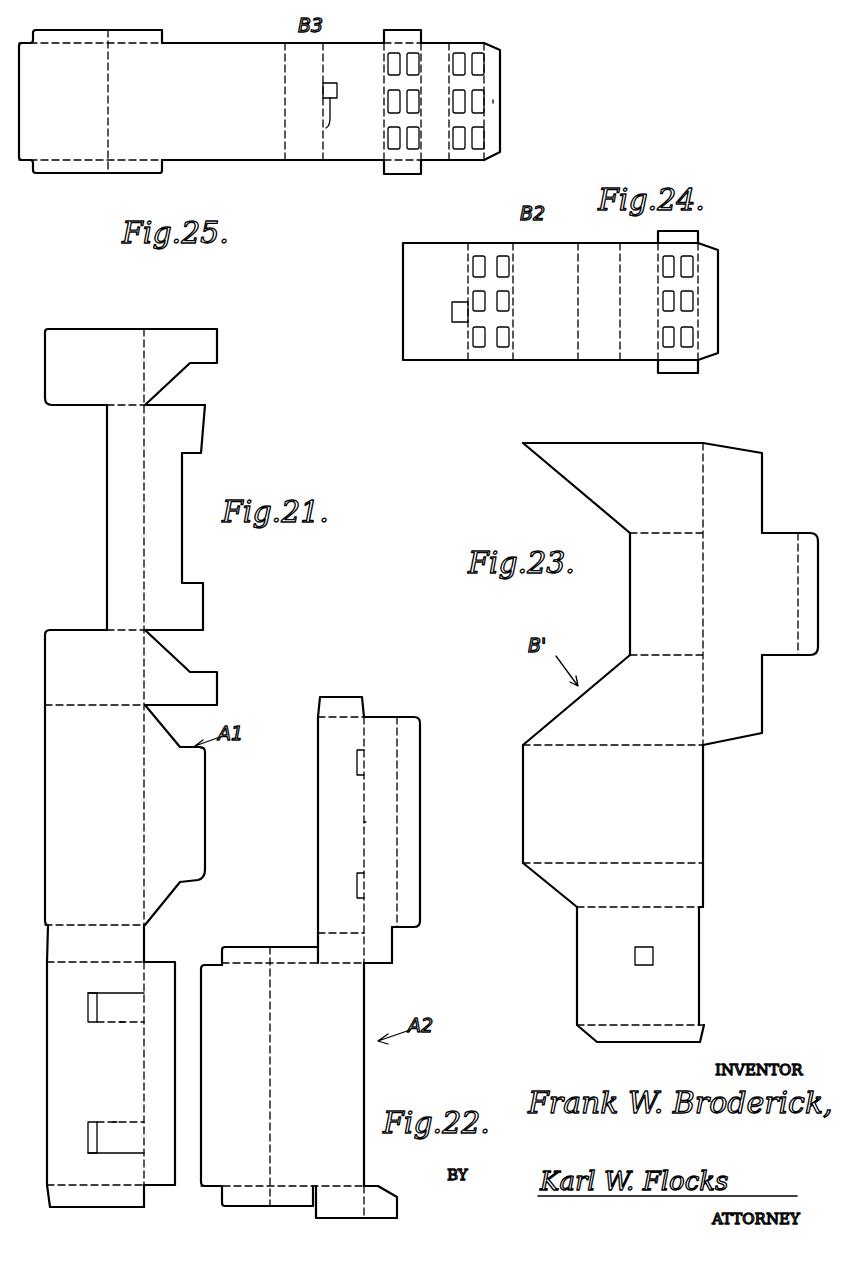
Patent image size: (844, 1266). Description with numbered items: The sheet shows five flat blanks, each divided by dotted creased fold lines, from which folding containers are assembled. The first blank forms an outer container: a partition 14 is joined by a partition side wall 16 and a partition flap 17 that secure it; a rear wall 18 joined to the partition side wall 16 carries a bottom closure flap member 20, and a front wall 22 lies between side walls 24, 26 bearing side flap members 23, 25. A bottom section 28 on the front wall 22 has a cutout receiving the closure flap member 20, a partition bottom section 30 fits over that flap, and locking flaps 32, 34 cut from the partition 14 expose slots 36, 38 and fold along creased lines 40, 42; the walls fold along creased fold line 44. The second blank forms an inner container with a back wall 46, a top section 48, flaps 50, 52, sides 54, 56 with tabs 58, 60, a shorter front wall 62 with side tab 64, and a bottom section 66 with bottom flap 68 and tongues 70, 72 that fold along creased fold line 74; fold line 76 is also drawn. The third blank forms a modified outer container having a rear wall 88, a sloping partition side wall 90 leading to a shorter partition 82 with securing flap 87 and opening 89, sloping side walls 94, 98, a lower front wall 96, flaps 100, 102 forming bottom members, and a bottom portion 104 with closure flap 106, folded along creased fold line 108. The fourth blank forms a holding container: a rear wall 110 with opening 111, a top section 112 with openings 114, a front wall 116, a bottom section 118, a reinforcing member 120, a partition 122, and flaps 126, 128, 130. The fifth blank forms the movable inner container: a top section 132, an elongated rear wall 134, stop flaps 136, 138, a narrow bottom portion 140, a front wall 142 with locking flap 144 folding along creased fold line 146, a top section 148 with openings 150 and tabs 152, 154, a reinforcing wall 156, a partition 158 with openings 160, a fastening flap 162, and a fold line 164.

In FIG. 21, the partition 14 is at (55, 1057).
In FIG. 21, the partition side wall 16 is at (52, 942).
In FIG. 21, the partition flap 17 is at (90, 1197).
In FIG. 21, the rear wall 18 is at (52, 745).
In FIG. 21, the bottom closure flap member 20 is at (165, 882).
In FIG. 21, the front wall 22 is at (112, 515).
In FIG. 21, the side flap member 23 is at (180, 327).
In FIG. 21, the side wall 24 is at (72, 327).
In FIG. 21, the side flap member 25 is at (205, 668).
In FIG. 21, the side wall 26 is at (64, 635).
In FIG. 21, the bottom section 28 is at (176, 540).
In FIG. 21, the partition bottom section 30 is at (165, 1180).
In FIG. 21, the locking flap 32 is at (112, 995).
In FIG. 21, the locking flap 34 is at (122, 1140).
In FIG. 21, the slot 36 is at (88, 1000).
In FIG. 21, the slot 38 is at (92, 1138).
In FIG. 21, the creased line 40 is at (122, 1023).
In FIG. 21, the creased line 42 is at (113, 1120).
In FIG. 21, the creased fold line 44 is at (144, 355).
In FIG. 22, the back wall 46 is at (355, 1075).
In FIG. 22, the top section 48 is at (282, 1074).
In FIG. 22, the flap 50 is at (242, 955).
In FIG. 22, the flap 52 is at (267, 1207).
In FIG. 22, the side 54 is at (318, 933).
In FIG. 22, the side 56 is at (333, 1190).
In FIG. 22, the tab 58 is at (378, 958).
In FIG. 22, the tab 60 is at (385, 1193).
In FIG. 22, the front wall 62 is at (318, 800).
In FIG. 22, the side tab 64 is at (332, 700).
In FIG. 22, the bottom section 66 is at (388, 915).
In FIG. 22, the bottom flap 68 is at (412, 805).
In FIG. 22, the tongue 70 is at (358, 763).
In FIG. 22, the tongue 72 is at (358, 880).
In FIG. 22, the creased fold line 74 is at (364, 822).
In FIG. 22, the fold line 76 is at (272, 1055).
In FIG. 23, the partition 82 is at (688, 975).
In FIG. 23, the securing flap 87 is at (595, 1040).
In FIG. 23, the rear wall 88 is at (525, 825).
In FIG. 23, the opening 89 is at (635, 958).
In FIG. 23, the partition side wall 90 is at (695, 883).
In FIG. 23, the side wall 94 is at (565, 720).
In FIG. 23, the front wall 96 is at (632, 605).
In FIG. 23, the side wall 98 is at (572, 475).
In FIG. 23, the flap 100 is at (745, 722).
In FIG. 23, the flap 102 is at (760, 459).
In FIG. 23, the bottom portion 104 is at (778, 656).
In FIG. 23, the closure flap 106 is at (806, 541).
In FIG. 23, the creased fold line 108 is at (703, 478).
In FIG. 24, the rear wall 110 is at (408, 273).
In FIG. 24, the opening 111 is at (452, 316).
In FIG. 24, the top section 112 is at (490, 353).
In FIG. 24, the openings 114 is at (478, 254).
In FIG. 24, the front wall 116 is at (555, 250).
In FIG. 24, the bottom section 118 is at (600, 345).
In FIG. 24, the reinforcing member 120 is at (645, 350).
In FIG. 24, the partition 122 is at (728, 316).
In FIG. 24, the flap 126 is at (690, 237).
In FIG. 24, the flap 128 is at (683, 385).
In FIG. 24, the flap 130 is at (708, 303).
In FIG. 25, the top section 132 is at (42, 133).
In FIG. 25, the rear wall 134 is at (229, 147).
In FIG. 25, the stop flap 136 is at (156, 32).
In FIG. 25, the stop flap 138 is at (121, 170).
In FIG. 25, the bottom portion 140 is at (310, 155).
In FIG. 25, the front wall 142 is at (360, 152).
In FIG. 25, the locking flap 144 is at (337, 92).
In FIG. 25, the creased fold line 146 is at (347, 119).
In FIG. 25, the top section 148 is at (405, 52).
In FIG. 25, the openings 150 is at (377, 101).
In FIG. 25, the tab 152 is at (418, 32).
In FIG. 25, the tab 154 is at (415, 173).
In FIG. 25, the reinforcing wall 156 is at (442, 155).
In FIG. 25, the partition 158 is at (488, 46).
In FIG. 25, the openings 160 is at (485, 67).
In FIG. 25, the fastening flap 162 is at (493, 103).
In FIG. 25, the fold line 164 is at (110, 110).